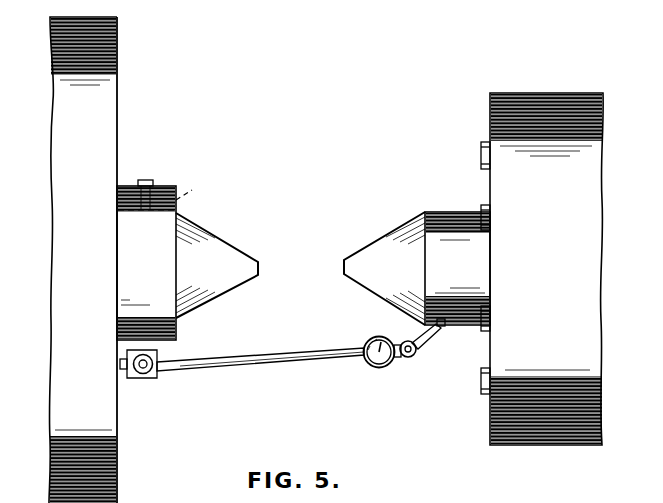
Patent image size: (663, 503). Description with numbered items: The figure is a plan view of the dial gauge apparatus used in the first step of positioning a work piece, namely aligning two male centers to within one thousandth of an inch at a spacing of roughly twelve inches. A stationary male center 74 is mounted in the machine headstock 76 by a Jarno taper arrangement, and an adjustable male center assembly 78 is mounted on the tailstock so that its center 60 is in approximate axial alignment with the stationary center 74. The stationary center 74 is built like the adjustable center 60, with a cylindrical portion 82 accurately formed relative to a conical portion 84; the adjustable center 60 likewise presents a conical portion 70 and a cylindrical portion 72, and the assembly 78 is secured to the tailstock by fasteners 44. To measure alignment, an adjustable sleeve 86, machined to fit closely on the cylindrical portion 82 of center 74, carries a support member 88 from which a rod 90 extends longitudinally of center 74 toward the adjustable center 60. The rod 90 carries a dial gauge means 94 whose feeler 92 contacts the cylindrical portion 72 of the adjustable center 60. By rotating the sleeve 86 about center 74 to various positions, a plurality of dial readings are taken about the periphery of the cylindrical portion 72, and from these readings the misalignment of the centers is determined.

The bolts 44 is at (480, 155).
The male center 60 is at (417, 248).
The cone 70 is at (410, 213).
The cylindrical portion 72 is at (458, 208).
The stationary male center 74 is at (191, 247).
The machine headstock 76 is at (118, 37).
The adjustable male center assembly 78 is at (474, 107).
The cylindrical portion 82 is at (190, 215).
The conical portion 84 is at (224, 247).
The adjustable sleeve 86 is at (158, 186).
The support member 88 is at (149, 379).
The rod 90 is at (246, 363).
The feeler 92 is at (439, 332).
The dial gauge means 94 is at (389, 367).